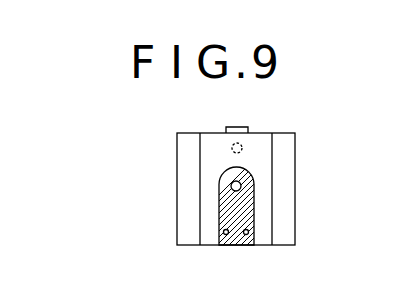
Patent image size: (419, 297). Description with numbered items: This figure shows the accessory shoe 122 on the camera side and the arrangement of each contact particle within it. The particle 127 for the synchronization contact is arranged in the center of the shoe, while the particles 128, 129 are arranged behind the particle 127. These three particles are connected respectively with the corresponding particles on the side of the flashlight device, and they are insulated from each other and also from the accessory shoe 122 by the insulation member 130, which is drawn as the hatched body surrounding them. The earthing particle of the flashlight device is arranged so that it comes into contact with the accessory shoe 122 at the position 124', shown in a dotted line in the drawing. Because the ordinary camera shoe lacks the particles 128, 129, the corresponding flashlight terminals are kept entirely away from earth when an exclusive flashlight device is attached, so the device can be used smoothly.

The accessory shoe 122 is at (189, 173).
The earthing contact position 124' is at (271, 127).
The synchronization contact particle 127 is at (253, 188).
The contact particle 128 is at (225, 237).
The contact particle 129 is at (246, 236).
The insulation member 130 is at (221, 213).